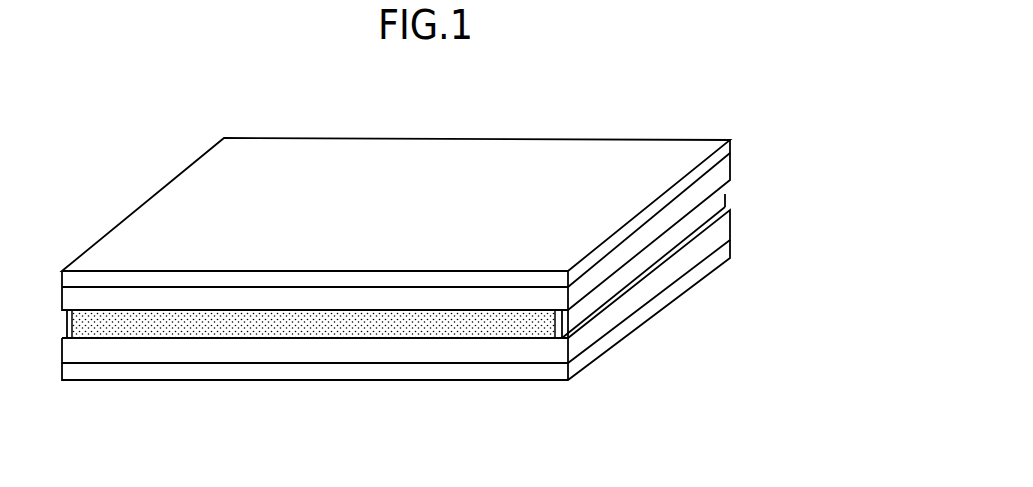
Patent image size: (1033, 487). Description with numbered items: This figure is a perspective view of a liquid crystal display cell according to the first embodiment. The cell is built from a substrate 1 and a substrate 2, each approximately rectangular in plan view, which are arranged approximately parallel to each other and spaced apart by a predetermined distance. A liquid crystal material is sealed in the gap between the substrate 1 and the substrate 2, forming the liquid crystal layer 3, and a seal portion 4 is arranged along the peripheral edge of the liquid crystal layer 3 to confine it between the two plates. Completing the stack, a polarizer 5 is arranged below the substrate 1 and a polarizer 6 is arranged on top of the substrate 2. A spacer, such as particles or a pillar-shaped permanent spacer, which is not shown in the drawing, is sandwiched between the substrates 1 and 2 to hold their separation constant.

The substrate 1 is at (587, 341).
The substrate 2 is at (732, 164).
The liquid crystal layer 3 is at (368, 328).
The seal portion 4 is at (68, 323).
The polarizer 5 is at (685, 281).
The polarizer 6 is at (730, 140).